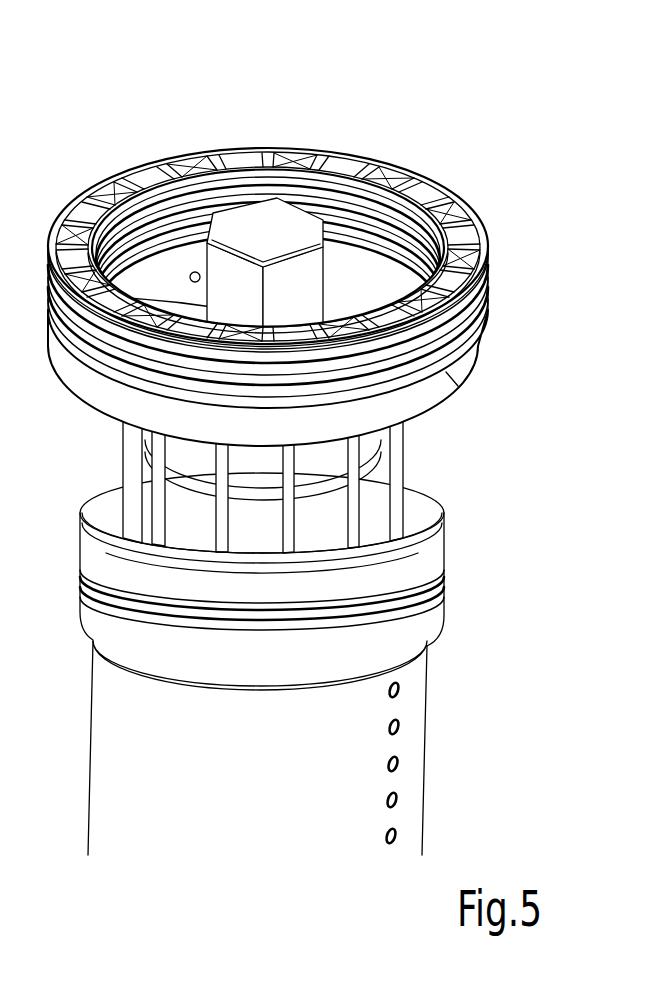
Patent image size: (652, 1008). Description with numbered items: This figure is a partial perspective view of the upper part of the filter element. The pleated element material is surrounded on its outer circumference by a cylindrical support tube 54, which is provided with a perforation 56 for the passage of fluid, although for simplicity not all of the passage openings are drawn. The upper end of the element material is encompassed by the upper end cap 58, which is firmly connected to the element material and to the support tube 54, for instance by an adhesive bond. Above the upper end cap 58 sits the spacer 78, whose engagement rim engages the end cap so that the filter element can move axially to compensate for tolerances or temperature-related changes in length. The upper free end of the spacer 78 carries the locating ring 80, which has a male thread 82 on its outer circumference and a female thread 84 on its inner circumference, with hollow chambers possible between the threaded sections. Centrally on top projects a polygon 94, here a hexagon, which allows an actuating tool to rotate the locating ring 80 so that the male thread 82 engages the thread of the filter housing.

The support tube 54 is at (412, 790).
The perforation 56 is at (397, 727).
The upper end cap 58 is at (415, 615).
The spacer 78 is at (375, 483).
The locating ring 80 is at (458, 383).
The male thread 82 is at (344, 256).
The female thread 84 is at (173, 207).
The polygon 94 is at (282, 232).